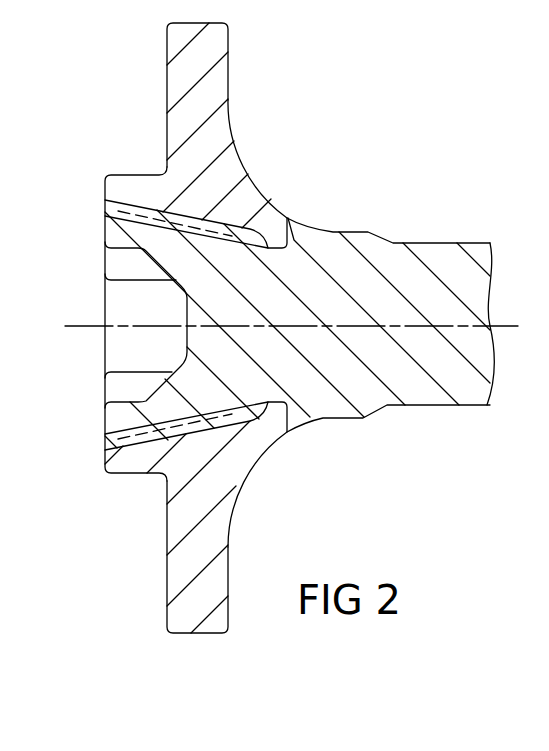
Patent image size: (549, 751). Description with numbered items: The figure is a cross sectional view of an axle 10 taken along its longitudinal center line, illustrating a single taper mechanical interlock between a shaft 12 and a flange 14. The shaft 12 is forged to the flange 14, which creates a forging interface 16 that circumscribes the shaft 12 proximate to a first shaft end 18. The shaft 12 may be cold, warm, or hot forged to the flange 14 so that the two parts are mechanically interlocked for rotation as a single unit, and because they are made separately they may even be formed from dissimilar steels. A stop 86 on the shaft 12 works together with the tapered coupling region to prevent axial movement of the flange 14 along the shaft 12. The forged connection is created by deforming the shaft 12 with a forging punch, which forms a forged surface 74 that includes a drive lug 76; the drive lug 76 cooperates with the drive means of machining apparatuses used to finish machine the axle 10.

The axle 10 is at (330, 171).
The shaft 12 is at (385, 246).
The flange 14 is at (228, 100).
The forging interface 16 is at (146, 220).
The first shaft end 18 is at (112, 241).
The forged surface 74 is at (183, 292).
The drive lug 76 is at (133, 265).
The stop 86 is at (298, 232).